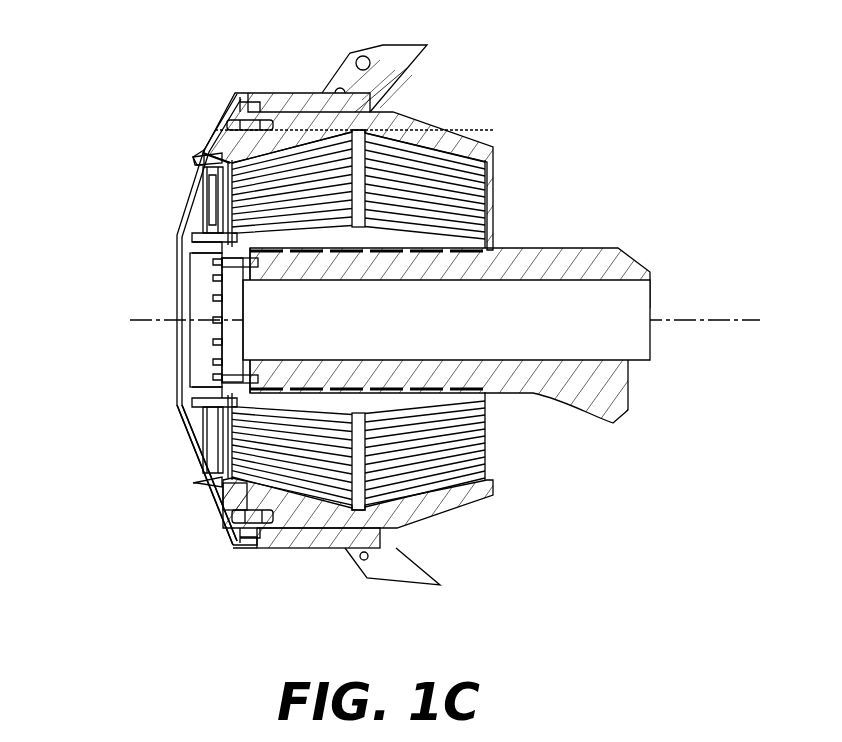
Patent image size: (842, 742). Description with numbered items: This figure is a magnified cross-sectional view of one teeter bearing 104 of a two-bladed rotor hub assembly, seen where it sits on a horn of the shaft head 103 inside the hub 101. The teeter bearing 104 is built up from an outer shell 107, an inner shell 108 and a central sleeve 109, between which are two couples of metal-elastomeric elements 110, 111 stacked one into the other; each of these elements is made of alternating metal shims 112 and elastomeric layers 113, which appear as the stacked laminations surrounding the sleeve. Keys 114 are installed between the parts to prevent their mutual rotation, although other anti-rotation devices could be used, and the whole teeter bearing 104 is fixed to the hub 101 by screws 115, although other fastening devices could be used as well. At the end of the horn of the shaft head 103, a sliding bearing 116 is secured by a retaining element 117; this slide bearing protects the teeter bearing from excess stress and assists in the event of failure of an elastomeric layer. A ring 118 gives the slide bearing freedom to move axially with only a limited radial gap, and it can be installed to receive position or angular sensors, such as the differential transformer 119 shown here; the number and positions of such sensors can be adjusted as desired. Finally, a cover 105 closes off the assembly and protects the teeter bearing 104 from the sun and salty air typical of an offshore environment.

The hub 101 is at (298, 538).
The shaft head 103 is at (552, 243).
The teeter bearing 104 is at (200, 500).
The cover 105 is at (177, 350).
The outer shell 107 is at (432, 130).
The inner shell 108 is at (233, 503).
The central sleeve 109 is at (442, 395).
The metal-elastomeric element 110 is at (227, 178).
The metal-elastomeric element 111 is at (227, 220).
The metal shims 112 is at (492, 453).
The elastomeric layers 113 is at (493, 212).
The keys 114 is at (458, 492).
The screws 115 is at (232, 542).
The sliding bearing 116 is at (197, 237).
The retaining element 117 is at (200, 243).
The ring 118 is at (203, 152).
The differential transformer 119 is at (210, 437).